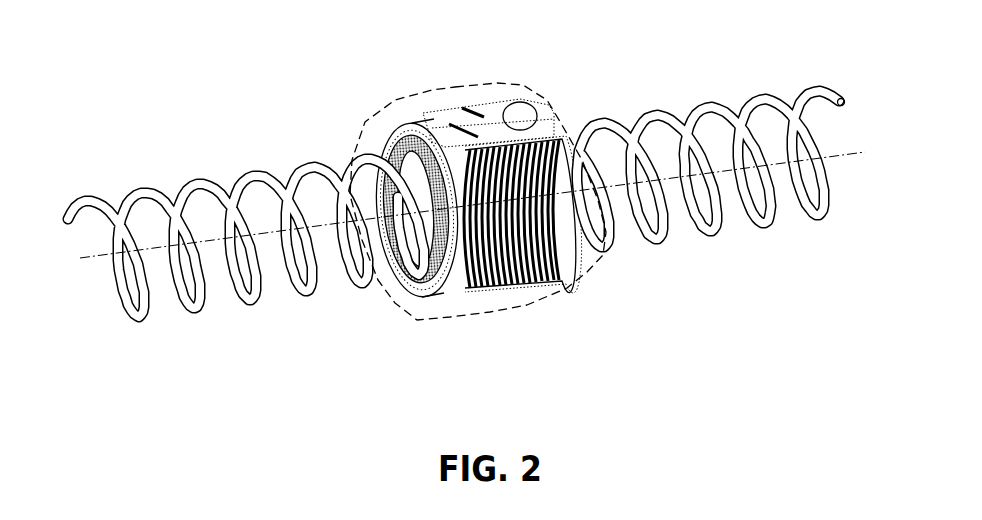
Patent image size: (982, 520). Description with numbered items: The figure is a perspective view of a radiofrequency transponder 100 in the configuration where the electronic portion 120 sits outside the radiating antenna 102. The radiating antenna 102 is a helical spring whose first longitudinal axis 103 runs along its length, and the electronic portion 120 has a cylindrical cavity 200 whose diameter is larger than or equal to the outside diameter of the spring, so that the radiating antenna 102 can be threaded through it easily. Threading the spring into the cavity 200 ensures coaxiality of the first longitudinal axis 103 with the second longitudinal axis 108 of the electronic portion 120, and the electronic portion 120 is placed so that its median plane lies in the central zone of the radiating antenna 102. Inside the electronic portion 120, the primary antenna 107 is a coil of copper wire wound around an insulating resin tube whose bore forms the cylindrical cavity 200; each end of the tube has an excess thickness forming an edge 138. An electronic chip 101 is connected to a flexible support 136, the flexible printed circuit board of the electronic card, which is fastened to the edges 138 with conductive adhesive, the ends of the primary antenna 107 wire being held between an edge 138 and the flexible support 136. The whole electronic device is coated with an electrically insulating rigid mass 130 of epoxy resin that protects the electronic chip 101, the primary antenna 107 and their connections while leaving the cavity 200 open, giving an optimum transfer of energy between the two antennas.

The radiofrequency transponder 100 is at (531, 338).
The electronic chip 101 is at (473, 110).
The radiating antenna 102 is at (683, 123).
The first longitudinal axis 103 is at (222, 240).
The primary antenna 107 is at (530, 247).
The second longitudinal axis 108 is at (440, 210).
The electronic portion 120 is at (495, 62).
The electrically insulating rigid mass 130 is at (498, 297).
The flexible support 136 is at (530, 117).
The edge 138 is at (475, 245).
The cylindrical cavity 200 is at (437, 193).